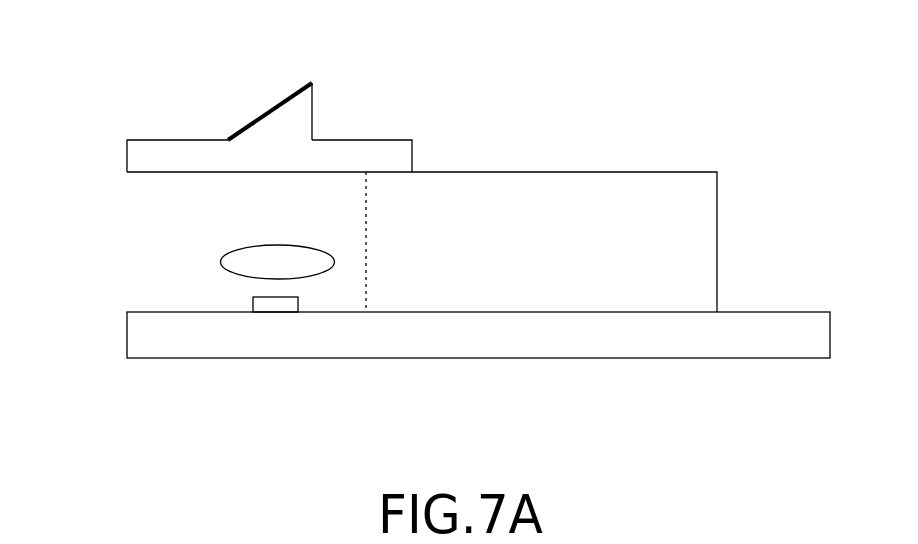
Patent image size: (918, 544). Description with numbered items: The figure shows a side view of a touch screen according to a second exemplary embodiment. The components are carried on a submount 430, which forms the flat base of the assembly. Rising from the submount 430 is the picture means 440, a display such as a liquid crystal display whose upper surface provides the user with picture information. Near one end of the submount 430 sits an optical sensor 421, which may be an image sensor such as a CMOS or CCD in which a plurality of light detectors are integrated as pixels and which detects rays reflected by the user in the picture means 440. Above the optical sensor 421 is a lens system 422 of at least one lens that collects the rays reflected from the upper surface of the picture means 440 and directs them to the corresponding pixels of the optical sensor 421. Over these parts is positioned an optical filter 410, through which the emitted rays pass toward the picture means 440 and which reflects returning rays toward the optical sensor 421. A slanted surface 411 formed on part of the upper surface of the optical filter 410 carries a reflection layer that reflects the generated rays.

The optical filter 410 is at (173, 132).
The slanted surface 411 is at (265, 112).
The picture means 440 is at (706, 248).
The submount 430 is at (502, 345).
The lens system 422 is at (220, 262).
The optical sensor 421 is at (253, 303).